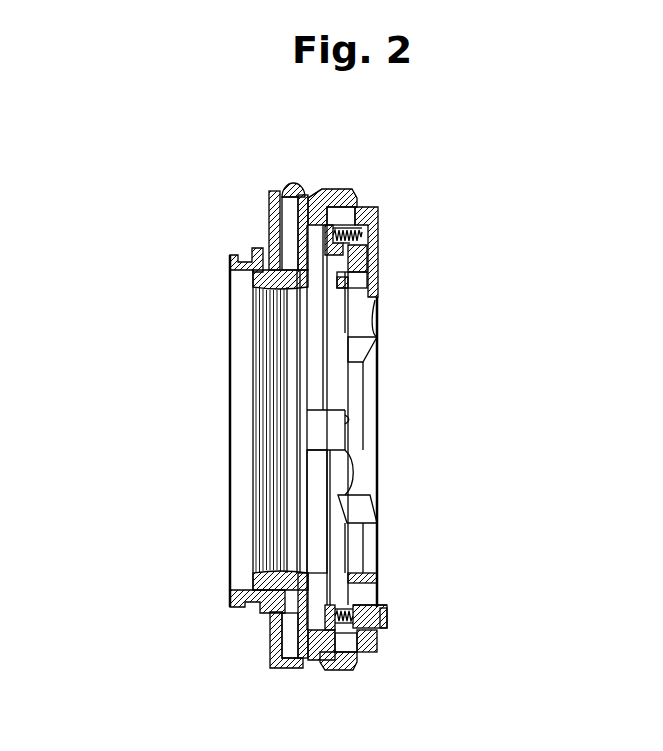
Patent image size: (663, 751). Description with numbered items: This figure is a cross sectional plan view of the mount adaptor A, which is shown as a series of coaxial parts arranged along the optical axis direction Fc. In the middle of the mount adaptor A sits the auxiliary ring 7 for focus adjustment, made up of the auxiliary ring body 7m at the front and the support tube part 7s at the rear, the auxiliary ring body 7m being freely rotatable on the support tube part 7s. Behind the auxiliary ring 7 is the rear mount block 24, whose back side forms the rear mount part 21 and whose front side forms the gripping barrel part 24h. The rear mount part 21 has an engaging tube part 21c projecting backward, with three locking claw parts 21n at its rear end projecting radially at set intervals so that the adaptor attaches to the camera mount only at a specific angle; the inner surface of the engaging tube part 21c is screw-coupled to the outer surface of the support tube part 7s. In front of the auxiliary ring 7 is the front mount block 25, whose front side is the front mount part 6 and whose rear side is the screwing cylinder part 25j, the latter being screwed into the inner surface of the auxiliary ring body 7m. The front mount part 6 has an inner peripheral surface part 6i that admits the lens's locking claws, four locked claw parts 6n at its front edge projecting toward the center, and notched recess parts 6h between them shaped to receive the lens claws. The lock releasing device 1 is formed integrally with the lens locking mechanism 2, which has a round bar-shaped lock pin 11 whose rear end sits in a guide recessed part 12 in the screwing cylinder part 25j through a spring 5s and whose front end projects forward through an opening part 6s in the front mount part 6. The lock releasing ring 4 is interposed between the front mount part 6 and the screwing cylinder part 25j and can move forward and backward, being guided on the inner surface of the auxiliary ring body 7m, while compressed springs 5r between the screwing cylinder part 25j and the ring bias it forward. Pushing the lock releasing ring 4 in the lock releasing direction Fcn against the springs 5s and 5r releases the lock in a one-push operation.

The rear mount part 21 is at (228, 322).
The engaging tube part 21c is at (251, 253).
The locking claw part 21n is at (235, 258).
The rear mount block 24 is at (267, 660).
The gripping barrel part 24h is at (262, 195).
The support tube part 7s is at (252, 520).
The compressed spring 5r is at (291, 244).
The spring 5s is at (298, 603).
The auxiliary ring 7 is at (346, 182).
The auxiliary ring body 7m is at (322, 182).
The front mount block 25 is at (396, 413).
The screwing cylinder part 25j is at (320, 480).
The front mount part 6 is at (389, 535).
The locked claw part 6n is at (376, 292).
The notched recess part 6h is at (372, 340).
The inner peripheral surface part 6i is at (359, 326).
The opening part 6s is at (390, 613).
The lens locking mechanism 2 is at (394, 616).
The lock pin 11 is at (384, 622).
The lock releasing device 1 is at (385, 656).
The lock releasing ring 4 is at (369, 656).
The guide recessed part 12 is at (310, 665).
The mount adaptor A is at (414, 222).
The optical axis direction Fc is at (168, 430).
The lock releasing direction Fcn is at (220, 432).